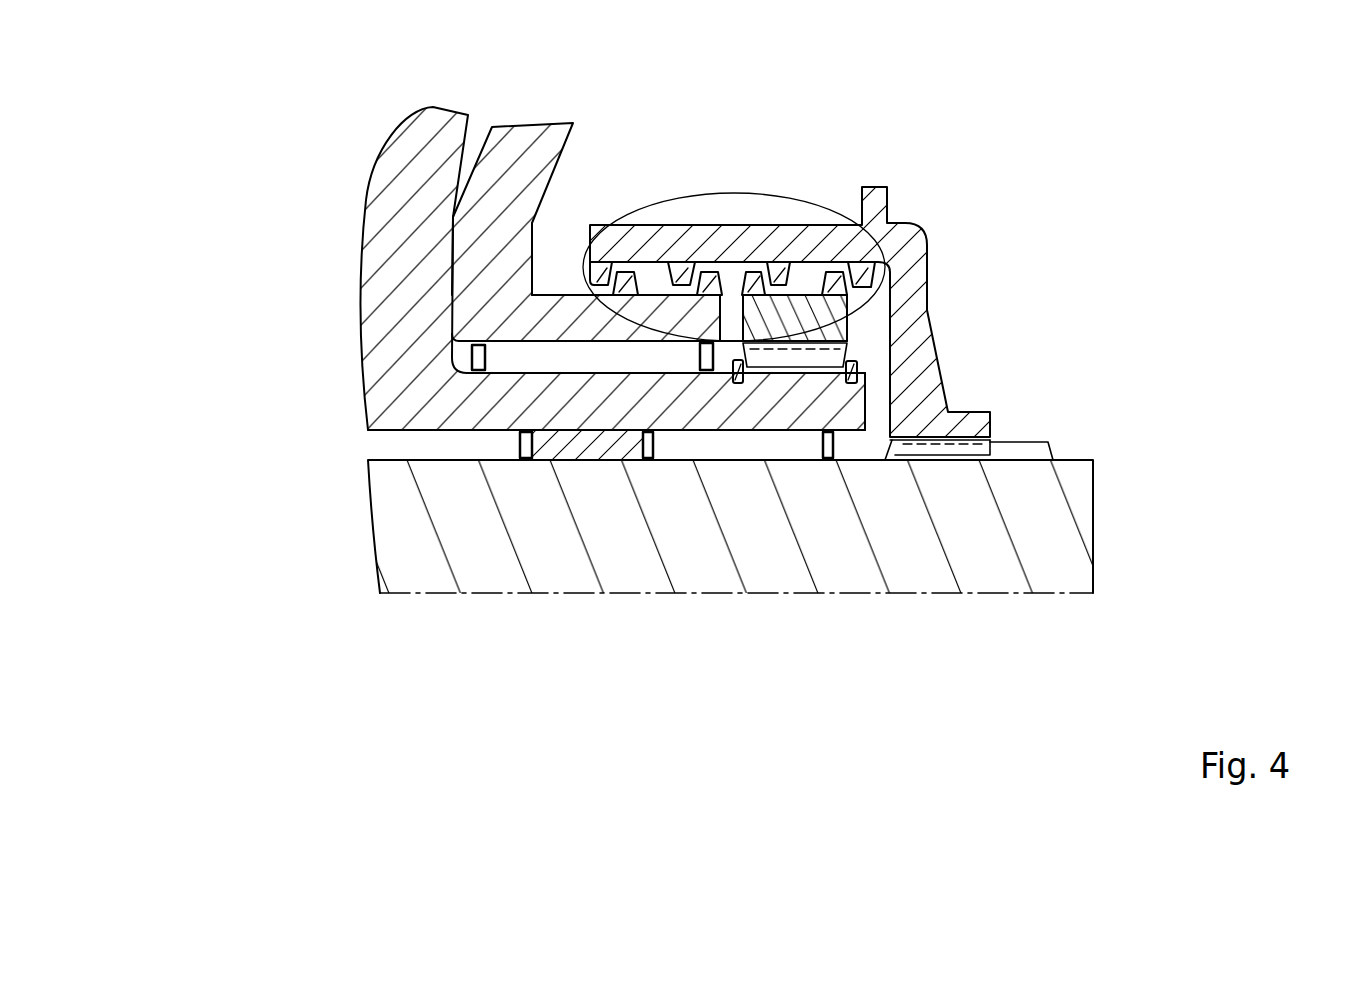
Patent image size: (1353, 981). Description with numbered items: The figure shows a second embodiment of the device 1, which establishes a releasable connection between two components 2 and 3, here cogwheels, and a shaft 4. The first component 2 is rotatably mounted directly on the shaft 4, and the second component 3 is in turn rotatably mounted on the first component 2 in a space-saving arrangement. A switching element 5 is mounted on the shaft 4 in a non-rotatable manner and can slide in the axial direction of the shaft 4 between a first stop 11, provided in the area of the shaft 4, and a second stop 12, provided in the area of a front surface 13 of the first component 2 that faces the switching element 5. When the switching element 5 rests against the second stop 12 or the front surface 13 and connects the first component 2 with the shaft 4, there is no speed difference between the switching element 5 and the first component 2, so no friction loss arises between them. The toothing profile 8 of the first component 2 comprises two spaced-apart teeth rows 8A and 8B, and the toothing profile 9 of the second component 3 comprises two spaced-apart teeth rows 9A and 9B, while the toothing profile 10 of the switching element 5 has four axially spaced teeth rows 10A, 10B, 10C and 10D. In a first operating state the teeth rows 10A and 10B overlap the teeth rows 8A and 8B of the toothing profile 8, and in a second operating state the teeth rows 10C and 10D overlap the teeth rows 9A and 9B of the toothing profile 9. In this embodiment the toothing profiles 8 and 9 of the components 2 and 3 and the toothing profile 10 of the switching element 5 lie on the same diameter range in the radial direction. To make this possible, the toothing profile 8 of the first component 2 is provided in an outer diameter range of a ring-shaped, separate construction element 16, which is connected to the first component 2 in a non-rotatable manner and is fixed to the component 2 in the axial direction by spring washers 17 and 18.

The device 1 is at (735, 128).
The first component 2 is at (417, 255).
The second component 3 is at (512, 190).
The shaft 4 is at (420, 517).
The switching element 5 is at (707, 240).
The toothing profile 8 is at (968, 204).
The teeth row 8A is at (755, 285).
The teeth row 8B is at (833, 283).
The toothing profile 9 is at (740, 307).
The teeth row 9A is at (560, 343).
The teeth row 9B is at (658, 297).
The toothing profile 10 is at (725, 204).
The teeth row 10A is at (782, 270).
The teeth row 10B is at (883, 247).
The teeth row 10C is at (602, 272).
The teeth row 10D is at (677, 272).
The first stop 11 is at (1068, 447).
The second stop 12 is at (876, 397).
The front surface 13 is at (888, 433).
The construction element 16 is at (815, 320).
The spring washer 17 is at (737, 383).
The spring washer 18 is at (848, 383).